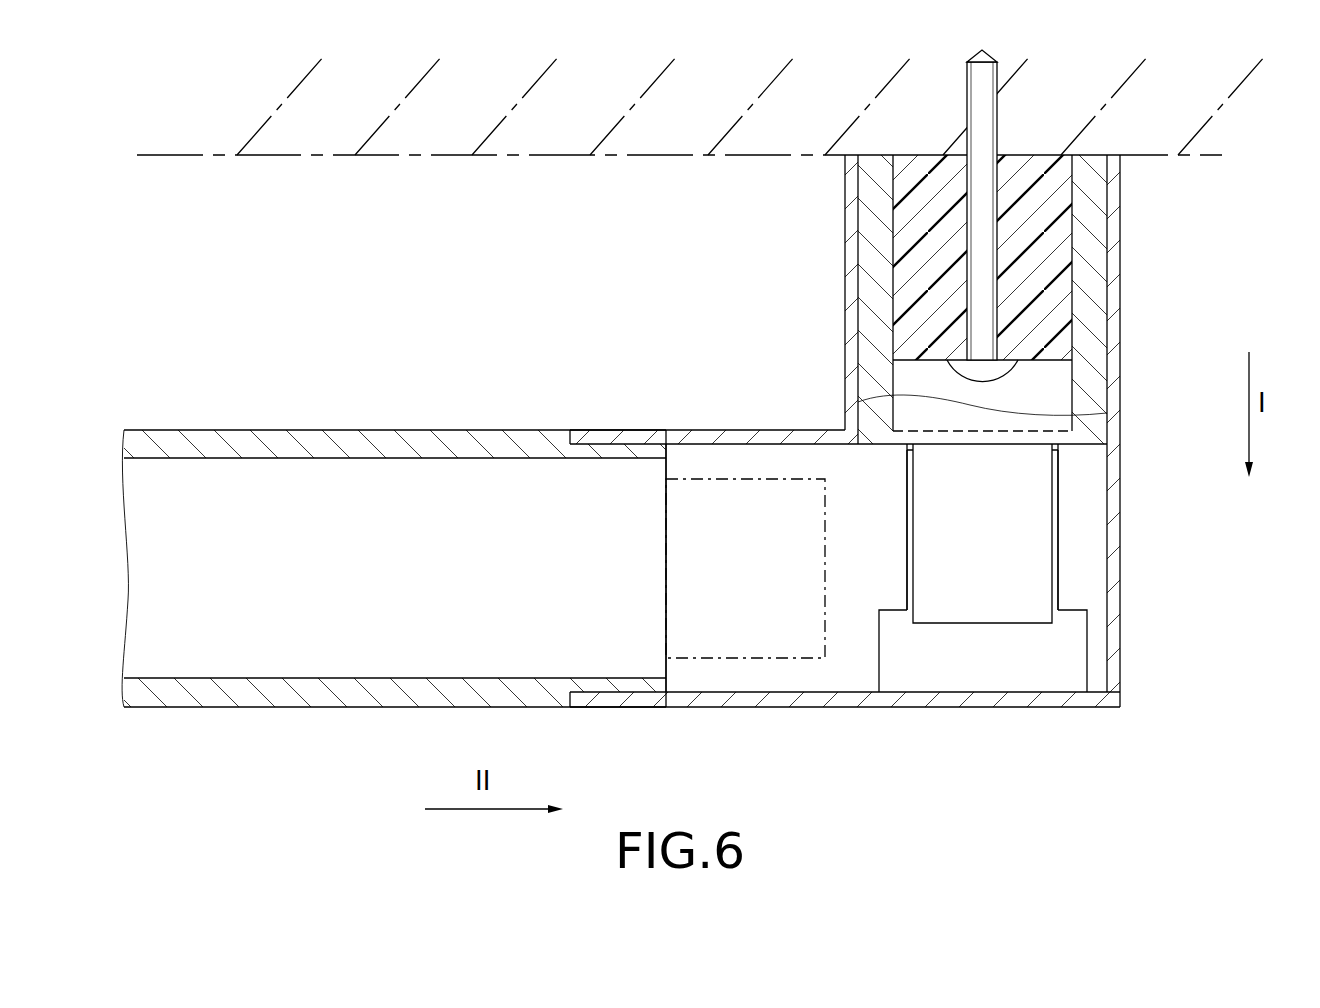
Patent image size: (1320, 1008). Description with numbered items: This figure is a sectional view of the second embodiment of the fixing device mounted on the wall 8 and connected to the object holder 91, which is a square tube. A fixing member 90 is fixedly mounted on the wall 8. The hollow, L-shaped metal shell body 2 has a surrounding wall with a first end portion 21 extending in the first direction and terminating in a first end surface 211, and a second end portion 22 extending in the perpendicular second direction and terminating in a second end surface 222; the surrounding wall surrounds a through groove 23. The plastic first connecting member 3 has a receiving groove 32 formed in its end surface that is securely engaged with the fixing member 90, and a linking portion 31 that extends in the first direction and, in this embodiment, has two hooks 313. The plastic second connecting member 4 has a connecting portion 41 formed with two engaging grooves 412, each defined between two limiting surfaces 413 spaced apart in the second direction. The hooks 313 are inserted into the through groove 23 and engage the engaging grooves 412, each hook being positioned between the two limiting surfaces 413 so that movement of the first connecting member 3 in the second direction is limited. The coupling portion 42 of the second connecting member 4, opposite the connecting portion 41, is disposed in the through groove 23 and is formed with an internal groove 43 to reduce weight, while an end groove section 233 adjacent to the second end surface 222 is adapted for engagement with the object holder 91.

The shell body 2 is at (910, 463).
The first end portion 21 is at (1005, 296).
The first end surface 211 is at (1108, 150).
The second end portion 22 is at (838, 388).
The second end surface 222 is at (580, 432).
The through groove 23 is at (1095, 531).
The end groove section 233 is at (612, 691).
The first connecting member 3 is at (1029, 299).
The linking portion 31 is at (1005, 616).
The hooks 313 is at (1012, 593).
The receiving groove 32 is at (1047, 386).
The second connecting member 4 is at (973, 562).
The connecting portion 41 is at (1080, 661).
The engaging grooves 412 is at (1067, 665).
The limiting surfaces 413 is at (1053, 492).
The coupling portion 42 is at (736, 680).
The internal groove 43 is at (790, 620).
The wall 8 is at (442, 172).
The fixing member 90 is at (1033, 148).
The object holder 91 is at (232, 712).